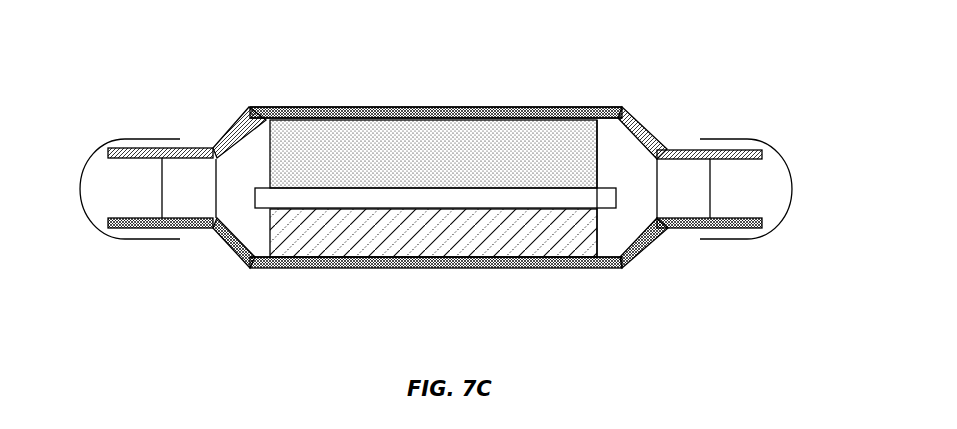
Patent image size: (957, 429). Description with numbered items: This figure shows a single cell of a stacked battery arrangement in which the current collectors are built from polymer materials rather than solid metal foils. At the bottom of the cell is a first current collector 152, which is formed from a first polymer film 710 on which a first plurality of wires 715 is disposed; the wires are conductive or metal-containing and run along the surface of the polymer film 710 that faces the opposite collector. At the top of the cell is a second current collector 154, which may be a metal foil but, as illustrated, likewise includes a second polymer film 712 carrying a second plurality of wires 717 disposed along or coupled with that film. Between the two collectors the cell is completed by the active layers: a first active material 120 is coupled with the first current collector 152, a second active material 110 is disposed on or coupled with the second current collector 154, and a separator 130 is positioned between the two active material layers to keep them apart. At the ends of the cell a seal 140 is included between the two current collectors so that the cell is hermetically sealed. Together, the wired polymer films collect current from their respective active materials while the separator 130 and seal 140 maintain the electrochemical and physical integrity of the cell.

The second active material 110 is at (470, 102).
The second polymer film 712 is at (593, 108).
The second plurality of wires 717 is at (545, 108).
The first polymer film 710 is at (577, 272).
The first plurality of wires 715 is at (520, 272).
The first active material 120 is at (292, 210).
The separator 130 is at (375, 187).
The second current collector 154 is at (713, 152).
The seal 140 is at (710, 198).
The first current collector 152 is at (765, 232).